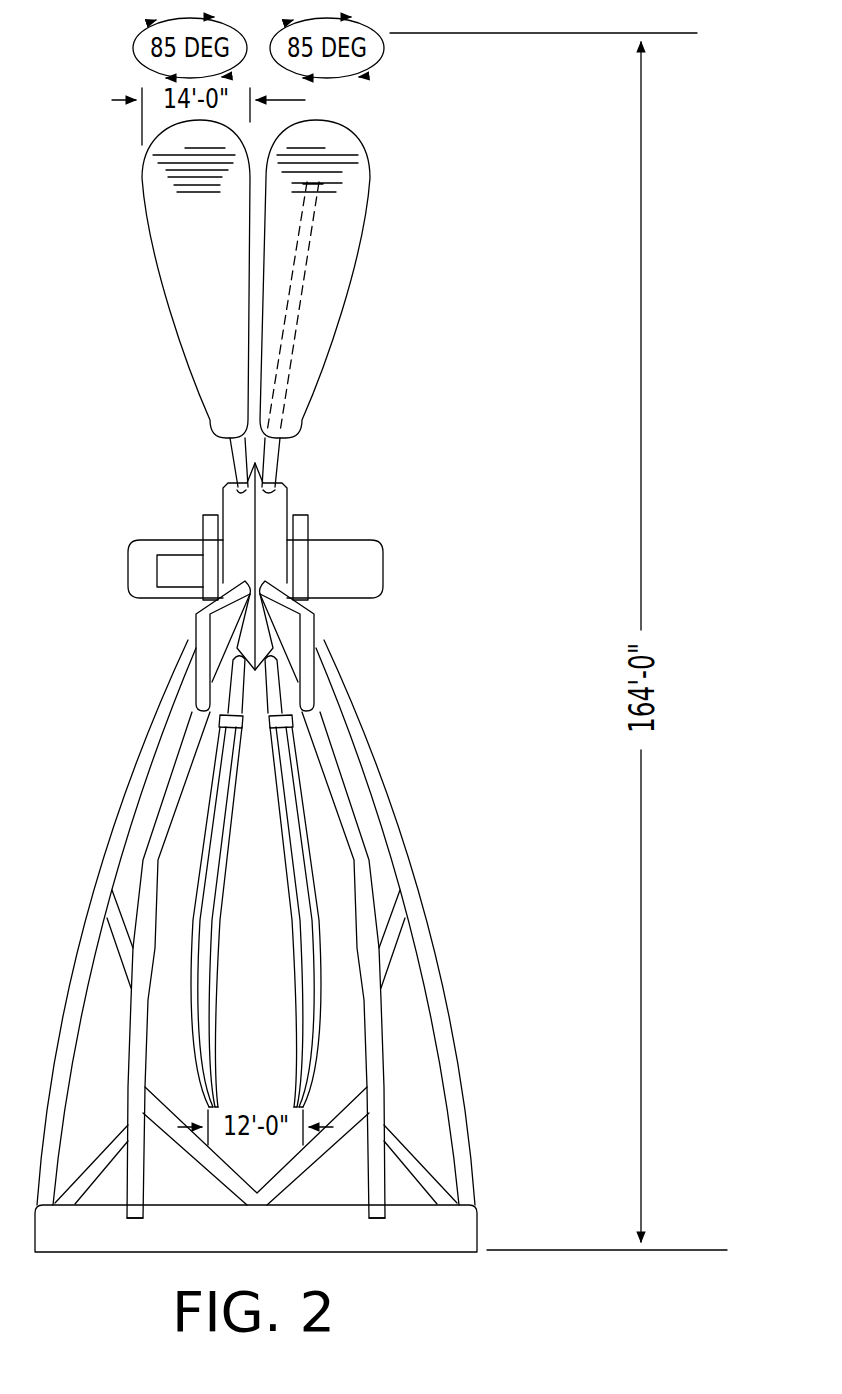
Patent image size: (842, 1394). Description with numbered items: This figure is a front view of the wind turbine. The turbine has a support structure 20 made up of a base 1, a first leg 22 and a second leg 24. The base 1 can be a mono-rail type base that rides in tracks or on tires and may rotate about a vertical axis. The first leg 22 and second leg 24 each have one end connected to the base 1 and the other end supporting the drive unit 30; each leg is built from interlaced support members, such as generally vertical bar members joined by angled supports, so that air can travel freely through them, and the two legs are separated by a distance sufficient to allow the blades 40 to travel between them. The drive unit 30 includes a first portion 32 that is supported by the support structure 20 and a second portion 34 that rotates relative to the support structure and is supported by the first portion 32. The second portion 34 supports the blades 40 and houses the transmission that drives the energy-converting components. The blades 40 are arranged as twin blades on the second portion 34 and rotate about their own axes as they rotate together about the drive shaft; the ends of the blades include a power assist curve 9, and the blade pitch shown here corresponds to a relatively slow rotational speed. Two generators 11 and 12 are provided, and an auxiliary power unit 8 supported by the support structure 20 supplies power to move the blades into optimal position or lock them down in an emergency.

The base 1 is at (482, 1250).
The auxiliary power unit 8 is at (167, 548).
The power assist curve 9 is at (208, 1003).
The generator 11 is at (133, 580).
The generator 12 is at (332, 580).
The support structure 20 is at (422, 772).
The first leg 22 is at (418, 883).
The second leg 24 is at (104, 875).
The drive unit 30 is at (322, 487).
The first portion 32 is at (310, 505).
The second portion 34 is at (290, 483).
The blades 40 is at (410, 178).